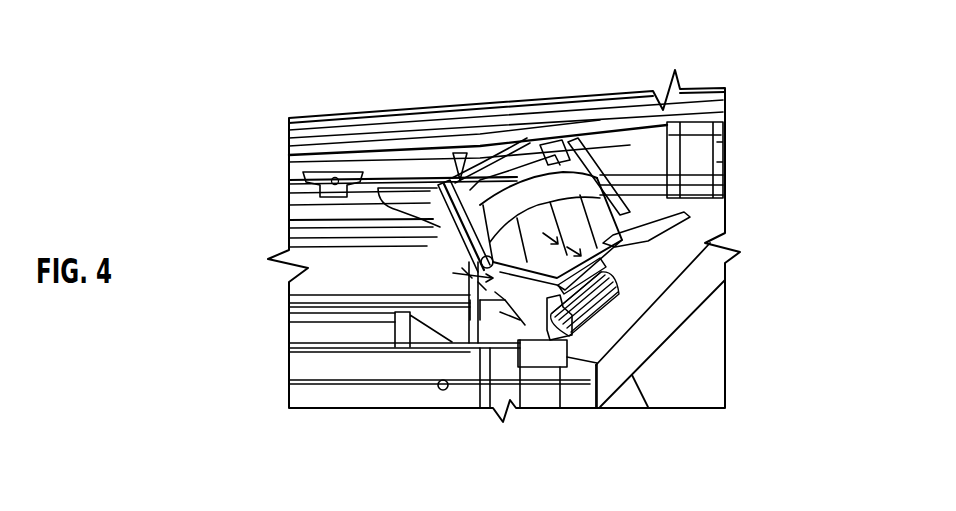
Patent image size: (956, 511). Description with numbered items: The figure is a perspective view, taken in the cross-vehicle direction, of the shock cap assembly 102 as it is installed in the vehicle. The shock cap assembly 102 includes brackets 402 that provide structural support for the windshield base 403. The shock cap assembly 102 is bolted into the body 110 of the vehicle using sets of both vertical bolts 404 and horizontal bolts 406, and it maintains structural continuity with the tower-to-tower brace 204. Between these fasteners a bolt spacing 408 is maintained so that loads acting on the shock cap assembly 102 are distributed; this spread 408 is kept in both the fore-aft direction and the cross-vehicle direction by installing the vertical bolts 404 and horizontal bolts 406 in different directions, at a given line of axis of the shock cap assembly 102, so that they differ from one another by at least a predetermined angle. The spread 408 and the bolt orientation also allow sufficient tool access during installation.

The shock cap assembly 102 is at (633, 118).
The body 110 is at (435, 222).
The tower-to-tower brace 204 is at (393, 166).
The brackets 402 is at (433, 204).
The windshield base 403 is at (530, 142).
The vertical bolts 404 is at (565, 255).
The horizontal bolts 406 is at (445, 240).
The bolt spacing 408 is at (565, 235).